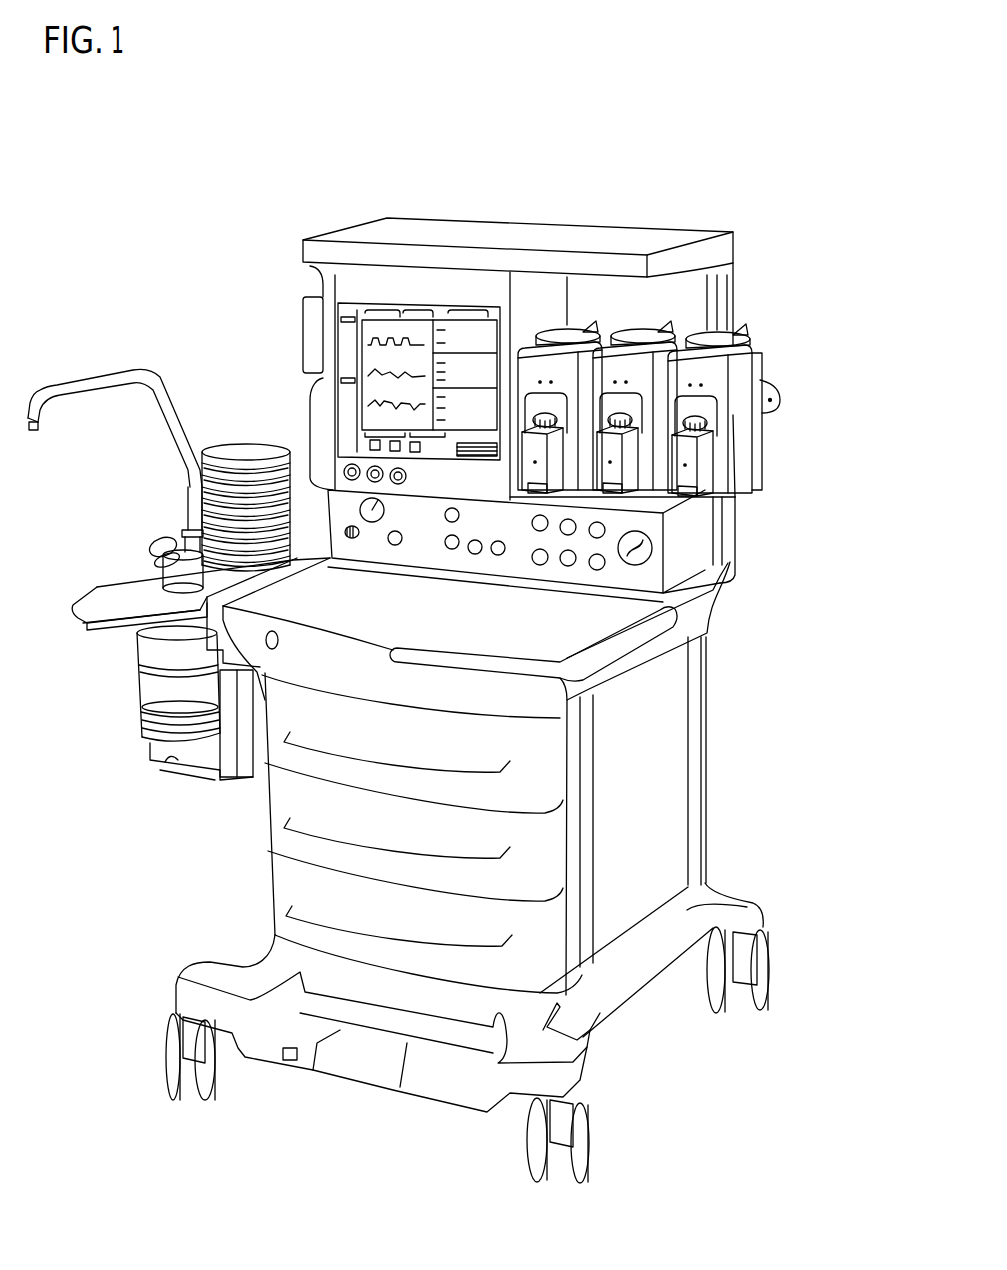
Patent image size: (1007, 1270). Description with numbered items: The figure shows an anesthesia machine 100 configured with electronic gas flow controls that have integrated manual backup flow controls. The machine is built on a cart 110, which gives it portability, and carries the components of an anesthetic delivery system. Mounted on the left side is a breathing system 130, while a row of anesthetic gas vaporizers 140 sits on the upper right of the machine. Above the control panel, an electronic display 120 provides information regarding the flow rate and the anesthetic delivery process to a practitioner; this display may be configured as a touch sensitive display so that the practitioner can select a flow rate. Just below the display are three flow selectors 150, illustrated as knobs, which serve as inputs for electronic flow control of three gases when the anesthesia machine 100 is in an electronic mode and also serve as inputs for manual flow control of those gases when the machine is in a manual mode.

The anesthesia machine 100 is at (673, 78).
The cart 110 is at (708, 742).
The electronic display 120 is at (340, 300).
The breathing system 130 is at (95, 345).
The anesthetic gas vaporizers 140 is at (762, 343).
The flow selectors 150 is at (344, 466).